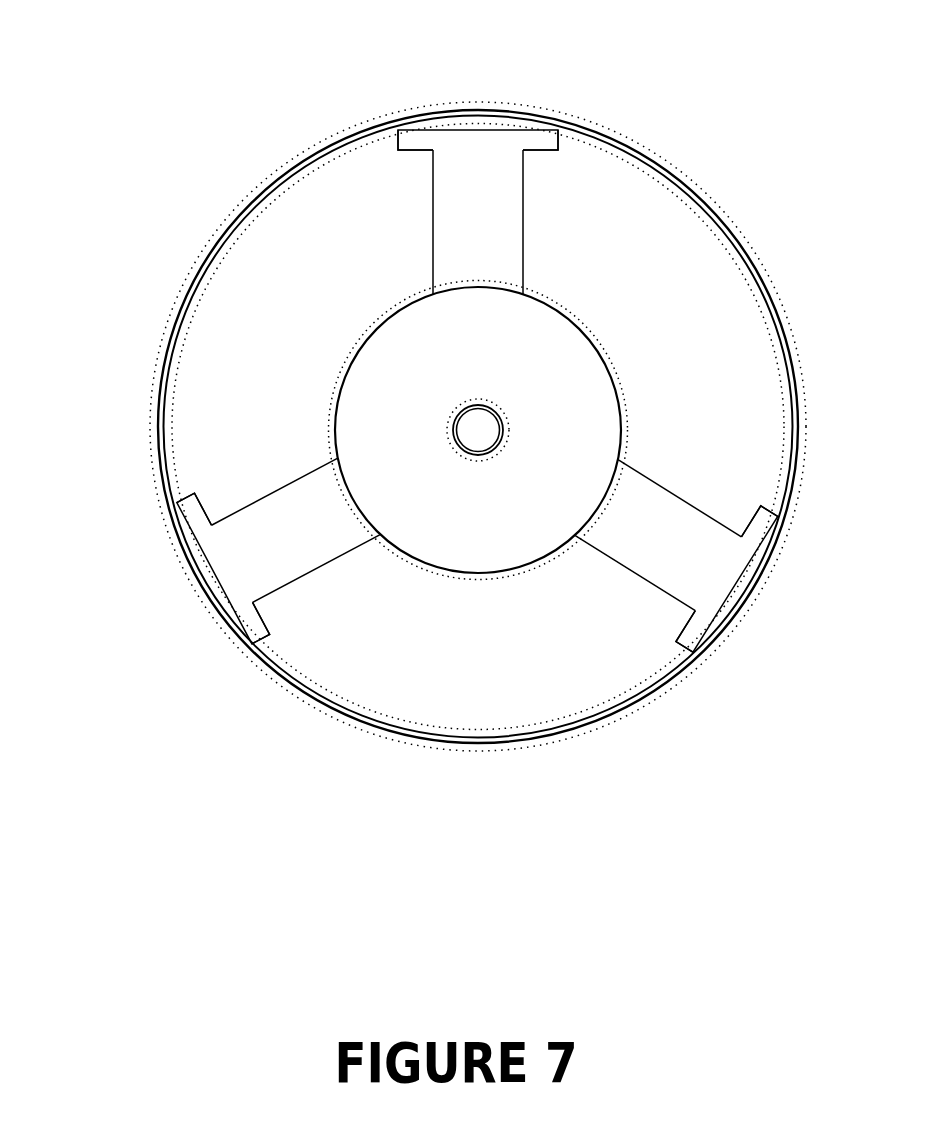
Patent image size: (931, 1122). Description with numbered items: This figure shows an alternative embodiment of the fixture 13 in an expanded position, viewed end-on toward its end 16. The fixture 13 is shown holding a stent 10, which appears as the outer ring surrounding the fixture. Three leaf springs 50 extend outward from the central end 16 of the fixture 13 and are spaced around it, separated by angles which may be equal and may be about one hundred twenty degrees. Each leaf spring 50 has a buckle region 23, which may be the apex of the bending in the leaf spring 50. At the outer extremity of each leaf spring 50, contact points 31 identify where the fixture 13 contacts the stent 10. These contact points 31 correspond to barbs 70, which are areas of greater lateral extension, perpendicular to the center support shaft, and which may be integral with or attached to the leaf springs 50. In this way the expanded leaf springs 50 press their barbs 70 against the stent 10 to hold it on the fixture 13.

The stent 10 is at (170, 338).
The fixture 13 is at (682, 293).
The end 16 is at (478, 430).
The buckle region 23 is at (457, 137).
The contact point 31 is at (395, 125).
The leaf spring 50 is at (477, 380).
The barb 70 is at (547, 135).